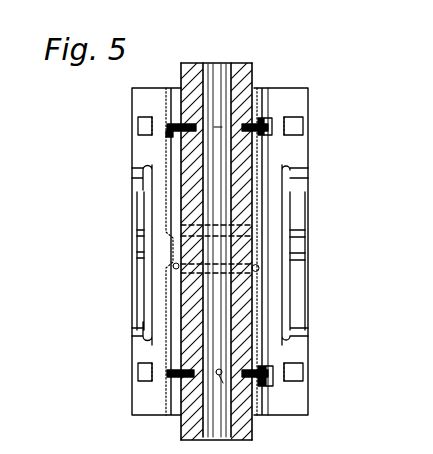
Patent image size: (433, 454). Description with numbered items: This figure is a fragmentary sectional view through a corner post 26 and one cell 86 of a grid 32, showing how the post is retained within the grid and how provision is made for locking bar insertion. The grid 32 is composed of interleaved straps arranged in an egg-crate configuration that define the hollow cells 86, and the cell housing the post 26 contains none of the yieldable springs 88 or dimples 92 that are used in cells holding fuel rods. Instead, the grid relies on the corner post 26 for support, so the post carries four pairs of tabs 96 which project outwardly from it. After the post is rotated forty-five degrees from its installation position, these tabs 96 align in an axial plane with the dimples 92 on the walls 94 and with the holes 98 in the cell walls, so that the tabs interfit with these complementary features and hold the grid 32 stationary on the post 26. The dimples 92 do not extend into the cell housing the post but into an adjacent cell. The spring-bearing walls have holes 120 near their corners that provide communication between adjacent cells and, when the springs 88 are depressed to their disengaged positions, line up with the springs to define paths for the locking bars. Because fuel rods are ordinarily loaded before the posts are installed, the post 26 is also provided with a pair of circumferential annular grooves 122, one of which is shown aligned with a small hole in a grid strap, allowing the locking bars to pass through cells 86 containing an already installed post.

The corner post 26 is at (254, 88).
The grid 32 is at (314, 127).
The hollow cell 86 is at (154, 96).
The yieldable spring 88 is at (156, 246).
The dimple 92 is at (137, 127).
The wall 94 is at (264, 180).
The tab 96 is at (166, 137).
The hole 98 is at (168, 124).
The hole 120 is at (259, 269).
The annular groove 122 is at (256, 232).